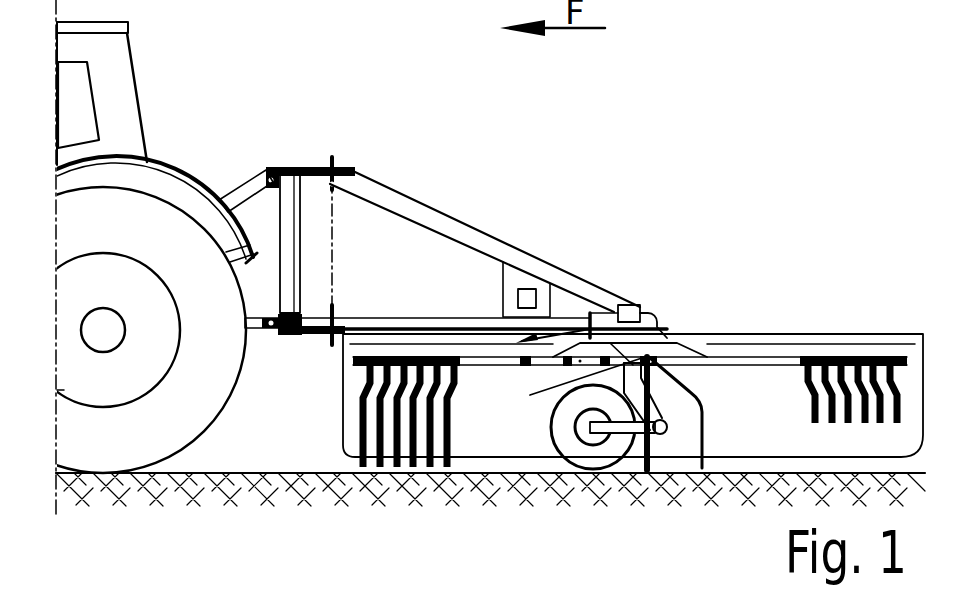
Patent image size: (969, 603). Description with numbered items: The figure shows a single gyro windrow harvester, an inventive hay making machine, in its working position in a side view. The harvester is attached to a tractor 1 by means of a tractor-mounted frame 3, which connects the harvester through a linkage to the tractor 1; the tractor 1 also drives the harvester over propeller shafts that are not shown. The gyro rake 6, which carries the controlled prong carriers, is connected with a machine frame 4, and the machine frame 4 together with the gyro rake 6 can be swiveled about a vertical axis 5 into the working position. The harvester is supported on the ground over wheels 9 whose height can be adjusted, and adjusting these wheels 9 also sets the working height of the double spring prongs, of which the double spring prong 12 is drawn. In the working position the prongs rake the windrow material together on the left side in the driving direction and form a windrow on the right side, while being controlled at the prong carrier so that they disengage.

The tractor 1 is at (167, 190).
The tractor-mounted frame 3 is at (288, 187).
The machine frame 4 is at (483, 247).
The vertical axis 5 is at (337, 262).
The gyro rake 6 is at (688, 321).
The wheels 9 is at (560, 428).
The double spring prong 12 is at (718, 395).